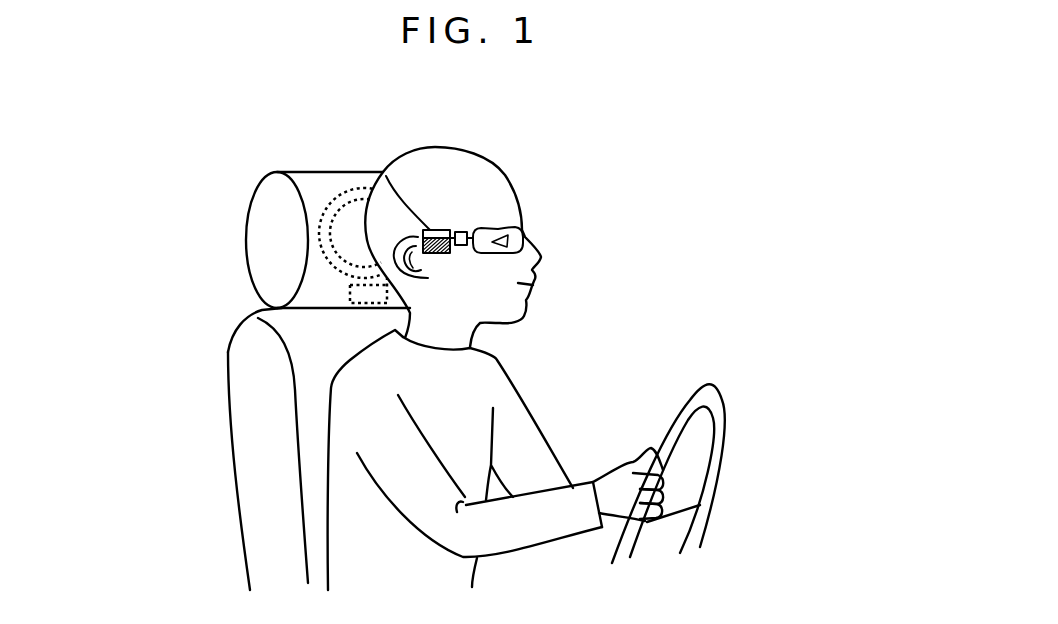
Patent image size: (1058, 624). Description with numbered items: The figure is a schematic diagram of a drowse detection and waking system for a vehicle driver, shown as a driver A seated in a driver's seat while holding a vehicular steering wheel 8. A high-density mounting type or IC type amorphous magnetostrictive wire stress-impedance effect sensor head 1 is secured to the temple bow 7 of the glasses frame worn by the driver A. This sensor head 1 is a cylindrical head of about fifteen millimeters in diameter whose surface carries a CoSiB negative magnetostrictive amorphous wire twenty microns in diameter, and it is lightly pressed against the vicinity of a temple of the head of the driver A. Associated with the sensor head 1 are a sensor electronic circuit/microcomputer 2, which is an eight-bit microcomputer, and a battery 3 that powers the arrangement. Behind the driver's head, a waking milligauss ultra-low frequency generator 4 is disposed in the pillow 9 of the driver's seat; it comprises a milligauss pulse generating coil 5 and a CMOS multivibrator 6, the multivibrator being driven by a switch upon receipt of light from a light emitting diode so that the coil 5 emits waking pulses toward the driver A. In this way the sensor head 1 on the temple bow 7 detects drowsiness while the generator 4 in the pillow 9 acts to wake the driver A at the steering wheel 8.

The stress-impedance effect sensor head 1 is at (460, 232).
The sensor electronic circuit/microcomputer 2 is at (386, 176).
The battery 3 is at (385, 309).
The waking milligauss ultra-low frequency generator 4 is at (280, 240).
The milligauss pulse generating coil 5 is at (316, 232).
The CMOS multivibrator 6 is at (348, 293).
The temple bow 7 is at (508, 228).
The vehicular steering wheel 8 is at (712, 383).
The pillow 9 is at (262, 177).
The driver A is at (528, 155).